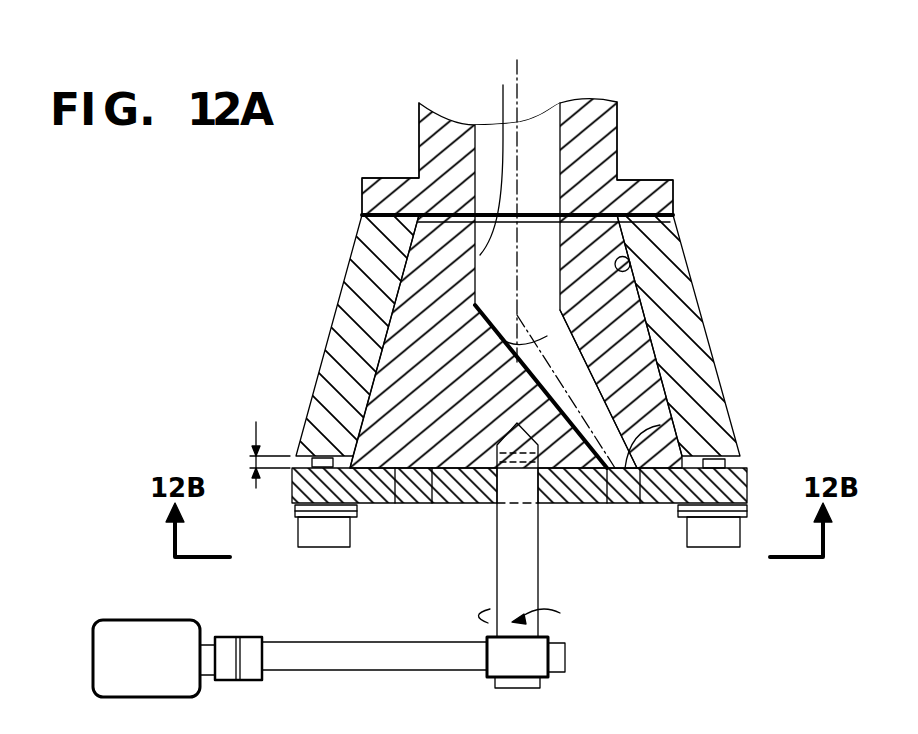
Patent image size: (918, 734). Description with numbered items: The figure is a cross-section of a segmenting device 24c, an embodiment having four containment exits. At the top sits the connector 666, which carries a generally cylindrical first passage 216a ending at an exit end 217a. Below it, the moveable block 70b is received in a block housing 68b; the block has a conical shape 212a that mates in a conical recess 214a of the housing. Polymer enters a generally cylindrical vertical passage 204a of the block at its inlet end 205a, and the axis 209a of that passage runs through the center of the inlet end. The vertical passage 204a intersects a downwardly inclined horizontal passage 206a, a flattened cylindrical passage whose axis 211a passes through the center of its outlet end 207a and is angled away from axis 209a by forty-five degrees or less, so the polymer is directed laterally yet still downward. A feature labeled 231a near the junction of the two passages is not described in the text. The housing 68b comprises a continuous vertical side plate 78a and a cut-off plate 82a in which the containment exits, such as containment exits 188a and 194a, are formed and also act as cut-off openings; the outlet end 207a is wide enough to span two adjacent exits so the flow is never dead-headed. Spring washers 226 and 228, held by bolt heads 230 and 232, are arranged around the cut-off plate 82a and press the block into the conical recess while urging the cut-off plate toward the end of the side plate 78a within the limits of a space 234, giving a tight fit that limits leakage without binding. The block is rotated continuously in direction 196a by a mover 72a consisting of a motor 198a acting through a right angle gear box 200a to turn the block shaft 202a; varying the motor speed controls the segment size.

The segmenting device 24c is at (395, 65).
The exit end 217a is at (503, 85).
The axis 209a is at (520, 96).
The flange 666 is at (419, 147).
The first passage 216a is at (563, 137).
The inlet end 205a is at (467, 253).
The vertical passage 204a is at (610, 245).
The moveable block 70b is at (423, 315).
The conical recess 214a is at (630, 268).
The block housing 68b is at (322, 308).
The conical shape 212a is at (643, 310).
The axis 211a is at (627, 350).
The nozzle channel wall 231a is at (530, 368).
The horizontal passage 206a is at (650, 377).
The vertical side plate 78a is at (337, 392).
The outlet end 207a is at (640, 423).
The space 234 is at (250, 462).
The spring washer 226 is at (296, 512).
The cut-off plate 82a is at (298, 537).
The containment exit 194a is at (445, 508).
The containment exit 188a is at (590, 505).
The spring washer 228 is at (747, 510).
The bolt head 230 is at (322, 548).
The bolt head 232 is at (705, 548).
The motor 198a is at (165, 620).
The mover 72a is at (333, 630).
The block shaft 202a is at (497, 578).
The direction 196a is at (560, 613).
The right angle gear box 200a is at (550, 680).